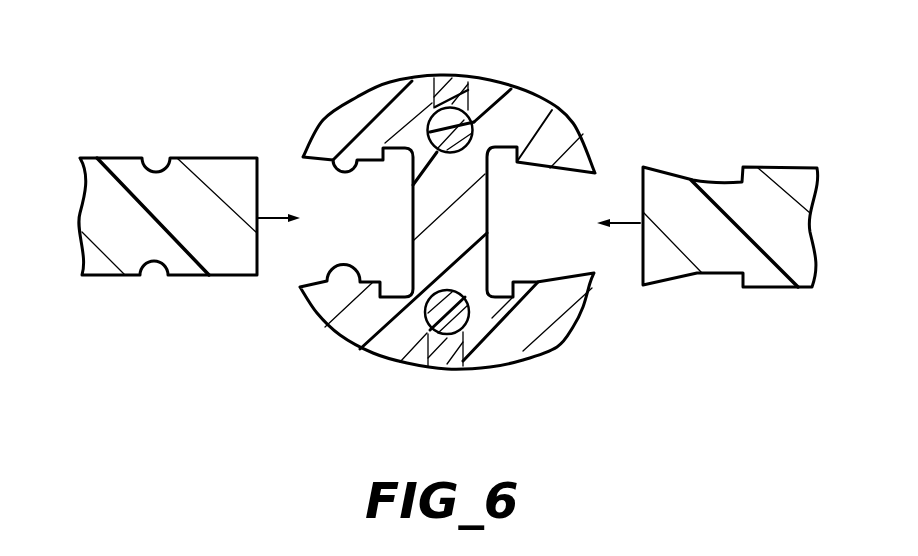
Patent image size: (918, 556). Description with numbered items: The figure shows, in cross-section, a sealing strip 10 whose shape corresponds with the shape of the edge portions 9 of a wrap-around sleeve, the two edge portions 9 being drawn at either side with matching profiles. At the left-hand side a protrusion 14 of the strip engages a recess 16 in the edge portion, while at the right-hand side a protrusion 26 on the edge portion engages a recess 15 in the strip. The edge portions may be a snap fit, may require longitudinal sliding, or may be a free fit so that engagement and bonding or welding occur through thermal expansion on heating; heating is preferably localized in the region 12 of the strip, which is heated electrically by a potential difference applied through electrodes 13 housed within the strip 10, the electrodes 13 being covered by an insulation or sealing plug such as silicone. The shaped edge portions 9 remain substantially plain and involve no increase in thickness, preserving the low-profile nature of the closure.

The edge portion 9 is at (202, 230).
The sealing strip 10 is at (453, 223).
The region 12 is at (460, 225).
The electrodes 13 is at (451, 114).
The protrusion 14 is at (343, 275).
The recess 15 is at (552, 110).
The recess 16 is at (158, 164).
The protrusion 26 is at (702, 180).